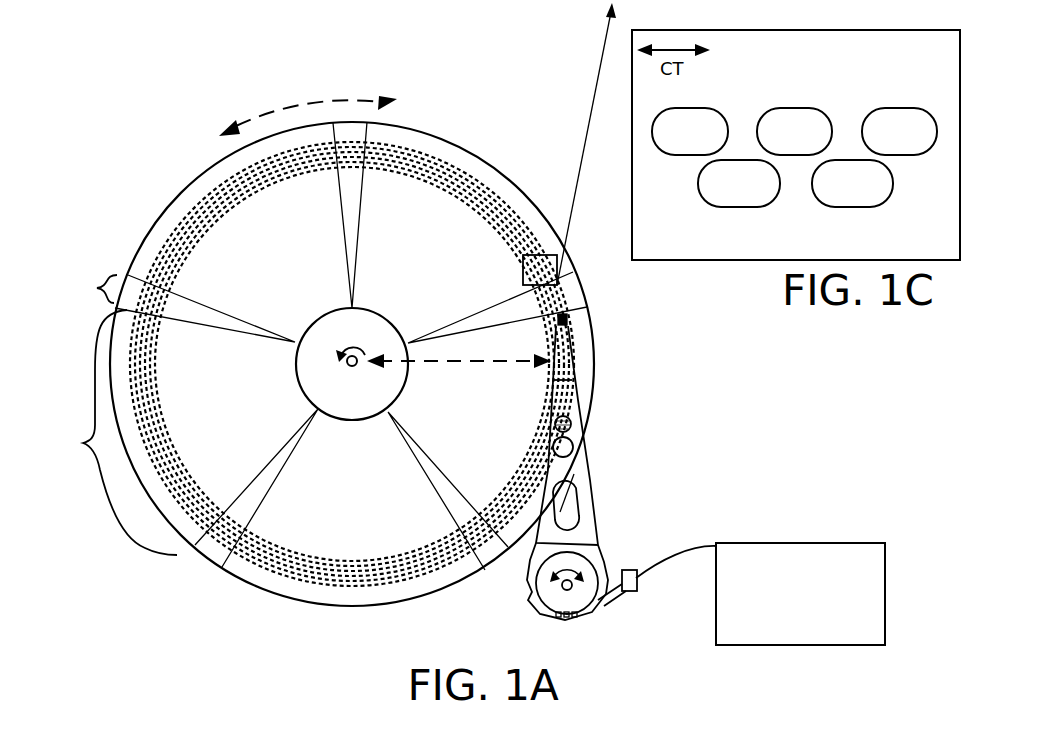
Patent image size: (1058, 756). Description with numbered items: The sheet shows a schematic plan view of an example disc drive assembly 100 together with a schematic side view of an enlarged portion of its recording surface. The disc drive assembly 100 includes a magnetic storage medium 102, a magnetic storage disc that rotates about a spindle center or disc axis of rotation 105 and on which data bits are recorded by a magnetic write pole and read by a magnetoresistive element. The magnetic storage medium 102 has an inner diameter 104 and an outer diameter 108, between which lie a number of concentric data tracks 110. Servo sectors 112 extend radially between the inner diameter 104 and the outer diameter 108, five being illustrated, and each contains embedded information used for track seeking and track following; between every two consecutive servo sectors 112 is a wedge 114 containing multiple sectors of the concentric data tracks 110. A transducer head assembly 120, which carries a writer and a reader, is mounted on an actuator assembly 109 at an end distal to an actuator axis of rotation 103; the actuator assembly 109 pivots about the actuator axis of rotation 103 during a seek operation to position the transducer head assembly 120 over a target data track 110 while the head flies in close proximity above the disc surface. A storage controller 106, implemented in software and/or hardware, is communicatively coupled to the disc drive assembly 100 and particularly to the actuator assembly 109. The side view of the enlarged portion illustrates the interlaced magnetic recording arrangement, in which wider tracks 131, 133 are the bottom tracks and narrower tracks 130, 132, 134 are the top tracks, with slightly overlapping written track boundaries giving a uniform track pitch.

In FIG. 1A, the disc drive assembly 100 is at (180, 62).
In FIG. 1A, the magnetic storage medium 102 is at (207, 172).
In FIG. 1A, the actuator axis of rotation 103 is at (532, 590).
In FIG. 1A, the inner diameter 104 is at (295, 372).
In FIG. 1A, the disc axis of rotation 105 is at (340, 352).
In FIG. 1A, the storage controller 106 is at (800, 594).
In FIG. 1A, the outer diameter 108 is at (238, 582).
In FIG. 1A, the actuator assembly 109 is at (588, 462).
In FIG. 1A, the data tracks 110 is at (480, 190).
In FIG. 1A, the servo sectors 112 is at (83, 289).
In FIG. 1A, the wedge 114 is at (110, 432).
In FIG. 1A, the transducer head assembly 120 is at (570, 320).
In FIG. 1C, the top track 130 is at (690, 131).
In FIG. 1C, the bottom track 131 is at (739, 183).
In FIG. 1C, the top track 132 is at (794, 131).
In FIG. 1C, the bottom track 133 is at (852, 183).
In FIG. 1C, the top track 134 is at (899, 131).